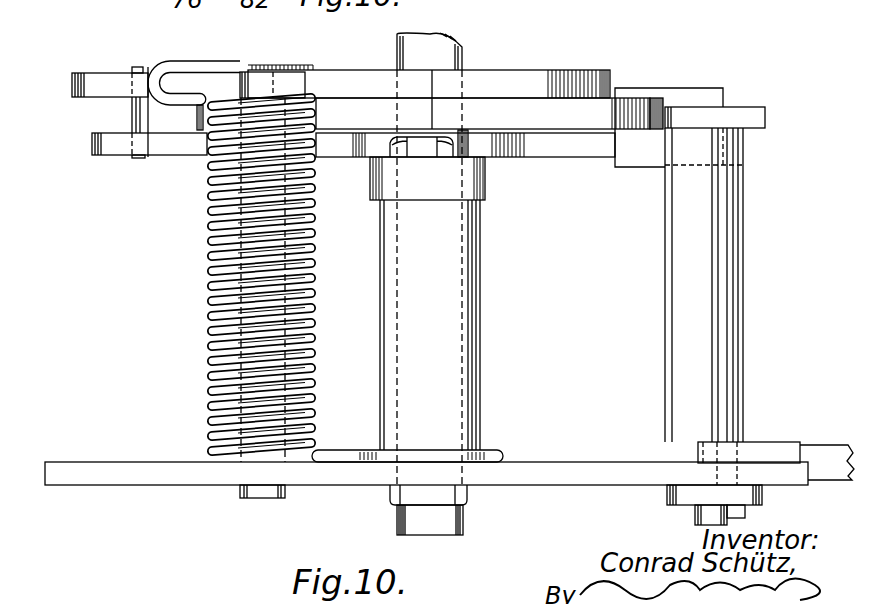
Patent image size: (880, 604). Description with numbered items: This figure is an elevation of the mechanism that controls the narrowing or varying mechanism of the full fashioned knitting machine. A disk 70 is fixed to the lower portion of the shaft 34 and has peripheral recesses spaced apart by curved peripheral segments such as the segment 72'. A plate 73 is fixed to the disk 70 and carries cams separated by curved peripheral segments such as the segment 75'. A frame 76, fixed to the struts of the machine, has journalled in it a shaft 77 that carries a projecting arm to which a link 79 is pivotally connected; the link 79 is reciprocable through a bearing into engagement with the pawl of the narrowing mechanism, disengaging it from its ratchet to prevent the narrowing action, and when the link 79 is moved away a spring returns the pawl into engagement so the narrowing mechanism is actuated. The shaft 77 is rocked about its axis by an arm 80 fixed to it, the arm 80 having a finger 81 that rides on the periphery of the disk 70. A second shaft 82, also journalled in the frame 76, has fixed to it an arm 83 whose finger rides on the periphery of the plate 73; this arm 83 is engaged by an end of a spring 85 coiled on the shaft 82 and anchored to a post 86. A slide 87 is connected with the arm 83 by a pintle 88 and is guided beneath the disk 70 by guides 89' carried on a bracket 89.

The shaft 34 is at (452, 55).
The disk 70 is at (623, 97).
The peripheral curved segment 72' is at (489, 76).
The plate 73 is at (587, 65).
The curved peripheral segment 75' is at (570, 65).
The frame 76 is at (627, 475).
The shaft 77 is at (732, 158).
The link 79 is at (828, 453).
The arm 80 is at (745, 115).
The finger 81 is at (688, 88).
The shaft 82 is at (257, 488).
The arm 83 is at (200, 76).
The spring 85 is at (207, 277).
The post 86 is at (457, 435).
The slide 87 is at (168, 150).
The pintle 88 is at (138, 113).
The bracket 89 is at (463, 174).
The guides 89' is at (502, 157).